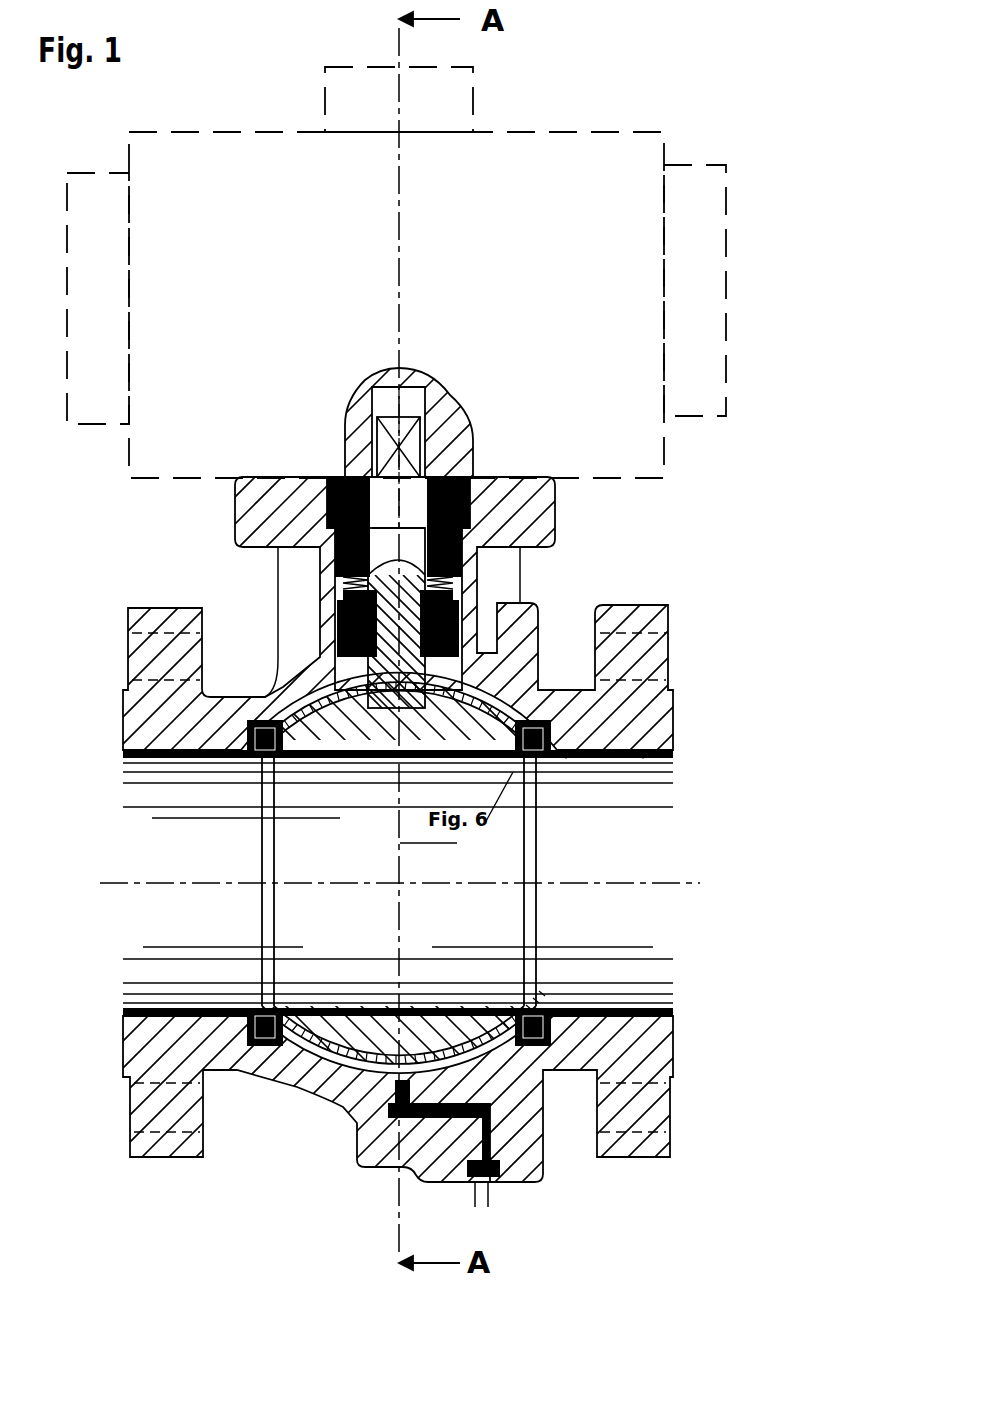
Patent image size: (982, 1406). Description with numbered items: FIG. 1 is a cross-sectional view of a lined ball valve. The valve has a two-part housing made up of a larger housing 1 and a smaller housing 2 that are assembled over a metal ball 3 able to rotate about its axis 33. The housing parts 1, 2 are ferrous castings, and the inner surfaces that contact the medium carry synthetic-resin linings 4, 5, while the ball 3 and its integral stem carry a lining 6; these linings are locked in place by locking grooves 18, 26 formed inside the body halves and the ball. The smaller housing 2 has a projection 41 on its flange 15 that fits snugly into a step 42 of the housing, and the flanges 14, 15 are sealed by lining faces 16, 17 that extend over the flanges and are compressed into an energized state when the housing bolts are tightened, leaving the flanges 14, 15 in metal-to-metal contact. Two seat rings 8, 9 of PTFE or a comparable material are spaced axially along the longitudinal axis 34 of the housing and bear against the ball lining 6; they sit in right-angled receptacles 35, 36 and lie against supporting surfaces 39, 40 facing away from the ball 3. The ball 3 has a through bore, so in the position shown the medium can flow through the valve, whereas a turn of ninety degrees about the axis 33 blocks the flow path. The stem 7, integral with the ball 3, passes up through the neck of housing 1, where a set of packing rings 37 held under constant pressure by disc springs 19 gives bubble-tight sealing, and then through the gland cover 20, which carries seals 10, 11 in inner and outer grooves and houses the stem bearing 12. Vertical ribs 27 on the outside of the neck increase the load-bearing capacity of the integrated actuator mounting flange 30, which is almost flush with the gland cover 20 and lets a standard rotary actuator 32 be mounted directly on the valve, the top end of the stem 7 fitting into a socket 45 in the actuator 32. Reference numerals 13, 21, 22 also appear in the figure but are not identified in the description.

The housing 1 is at (152, 707).
The smaller housing 2 is at (625, 727).
The ball 3 is at (373, 1037).
The lining 4 is at (175, 1003).
The lining 5 is at (605, 1003).
The lining of the ball-stem 6 is at (420, 1005).
The stem 7 is at (458, 603).
The seating ring 8 is at (272, 738).
The seating ring 9 is at (511, 750).
The seal 10 is at (340, 478).
The seal 11 is at (332, 540).
The stem bearing 12 is at (372, 550).
The packing 13 is at (353, 620).
The flange 14 is at (454, 1174).
The flange 15 is at (513, 1172).
The lining face 16 is at (475, 1207).
The lining face 17 is at (488, 1207).
The locking groove 18 is at (643, 752).
The disc springs 19 is at (366, 580).
The gland cover 20 is at (408, 567).
The seal 21 is at (533, 757).
The seal 22 is at (267, 753).
The locking groove 26 is at (500, 707).
The vertical ribs 27 is at (498, 582).
The actuator mounting flange 30 is at (268, 523).
The rotary actuator 32 is at (626, 410).
The axis 33 is at (399, 350).
The longitudinal axis 34 is at (348, 883).
The receptacle 35 is at (263, 1042).
The receptacle 36 is at (547, 1047).
The packing rings 37 is at (350, 632).
The supporting surface 39 is at (253, 1030).
The supporting surface 40 is at (528, 1013).
The projection 41 is at (445, 1090).
The step 42 is at (392, 1167).
The socket 45 is at (385, 400).